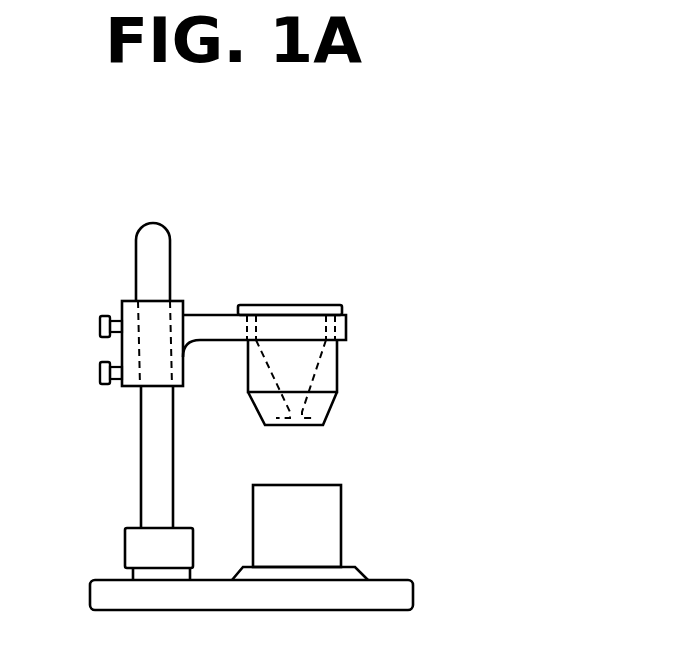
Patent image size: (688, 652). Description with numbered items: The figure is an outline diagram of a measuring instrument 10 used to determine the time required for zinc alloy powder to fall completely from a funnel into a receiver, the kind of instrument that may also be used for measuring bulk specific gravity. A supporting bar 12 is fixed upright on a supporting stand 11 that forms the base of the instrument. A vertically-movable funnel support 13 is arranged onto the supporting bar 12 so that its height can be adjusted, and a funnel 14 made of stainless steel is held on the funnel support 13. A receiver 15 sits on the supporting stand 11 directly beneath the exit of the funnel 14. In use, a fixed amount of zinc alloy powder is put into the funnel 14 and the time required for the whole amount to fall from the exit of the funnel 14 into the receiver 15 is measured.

The measuring instrument 10 is at (345, 255).
The supporting stand 11 is at (405, 593).
The supporting bar 12 is at (143, 458).
The funnel support 13 is at (205, 325).
The funnel 14 is at (336, 368).
The receiver 15 is at (341, 503).